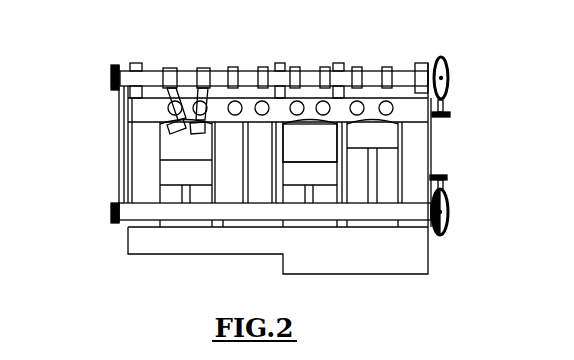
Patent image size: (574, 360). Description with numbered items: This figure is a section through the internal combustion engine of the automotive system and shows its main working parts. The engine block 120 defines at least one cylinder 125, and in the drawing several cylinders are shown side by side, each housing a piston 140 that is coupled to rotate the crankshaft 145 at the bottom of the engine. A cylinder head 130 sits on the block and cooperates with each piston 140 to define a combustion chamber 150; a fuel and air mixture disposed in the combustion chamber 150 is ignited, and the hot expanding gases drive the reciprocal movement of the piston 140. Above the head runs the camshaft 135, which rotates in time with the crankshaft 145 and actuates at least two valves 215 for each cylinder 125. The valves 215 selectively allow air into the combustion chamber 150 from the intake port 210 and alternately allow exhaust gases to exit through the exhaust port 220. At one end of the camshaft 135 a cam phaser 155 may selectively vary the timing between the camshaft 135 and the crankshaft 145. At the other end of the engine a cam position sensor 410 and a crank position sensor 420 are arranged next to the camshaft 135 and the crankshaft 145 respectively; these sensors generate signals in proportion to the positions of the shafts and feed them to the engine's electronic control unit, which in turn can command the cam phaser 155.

The engine block 120 is at (128, 162).
The cylinder 125 is at (312, 122).
The cylinder head 130 is at (128, 118).
The camshaft 135 is at (185, 68).
The piston 140 is at (313, 173).
The crankshaft 145 is at (155, 213).
The combustion chamber 150 is at (382, 124).
The cam phaser 155 is at (110, 72).
The intake port 210 is at (287, 150).
The valves 215 is at (172, 113).
The exhaust port 220 is at (257, 100).
The cam position sensor 410 is at (445, 113).
The crank position sensor 420 is at (445, 178).